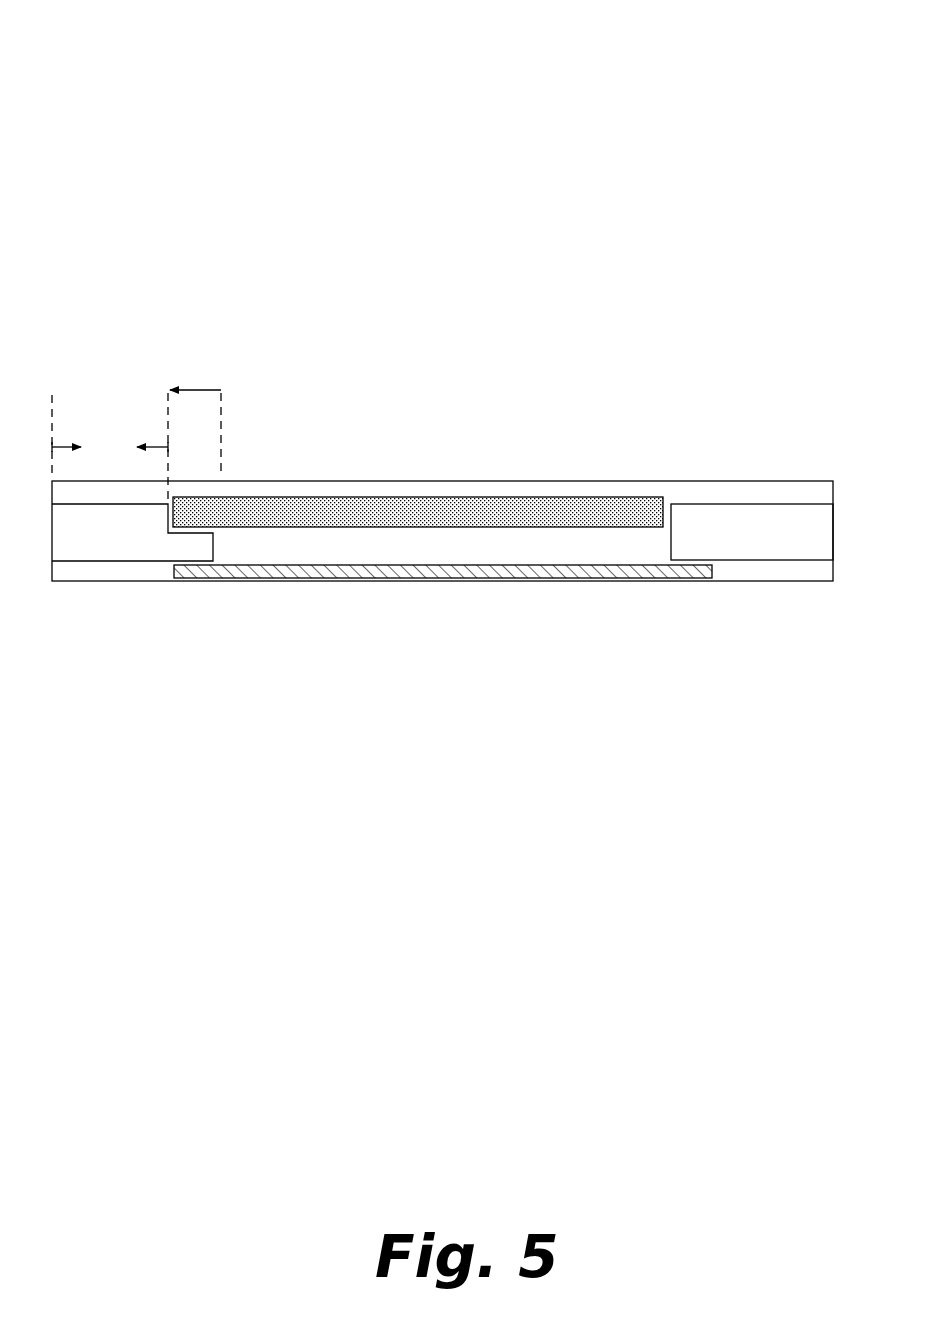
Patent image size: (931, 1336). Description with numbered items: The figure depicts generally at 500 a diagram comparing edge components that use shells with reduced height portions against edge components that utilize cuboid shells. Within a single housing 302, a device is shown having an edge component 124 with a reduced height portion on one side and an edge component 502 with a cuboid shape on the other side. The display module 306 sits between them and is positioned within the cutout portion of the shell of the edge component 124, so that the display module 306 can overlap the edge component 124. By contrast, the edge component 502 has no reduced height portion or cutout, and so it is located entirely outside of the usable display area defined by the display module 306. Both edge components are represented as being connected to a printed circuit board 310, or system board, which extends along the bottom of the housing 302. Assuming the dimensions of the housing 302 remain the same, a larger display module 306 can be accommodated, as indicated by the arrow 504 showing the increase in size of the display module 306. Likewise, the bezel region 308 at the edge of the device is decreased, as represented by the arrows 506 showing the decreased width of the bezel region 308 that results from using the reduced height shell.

The diagram 500 is at (130, 62).
The housing 302 is at (112, 583).
The edge component 124 is at (132, 532).
The edge component 502 is at (752, 532).
The display module 306 is at (400, 496).
The printed circuit board 310 is at (368, 574).
The bezel region 308 is at (116, 386).
The arrow 504 is at (201, 381).
The arrows 506 is at (110, 435).